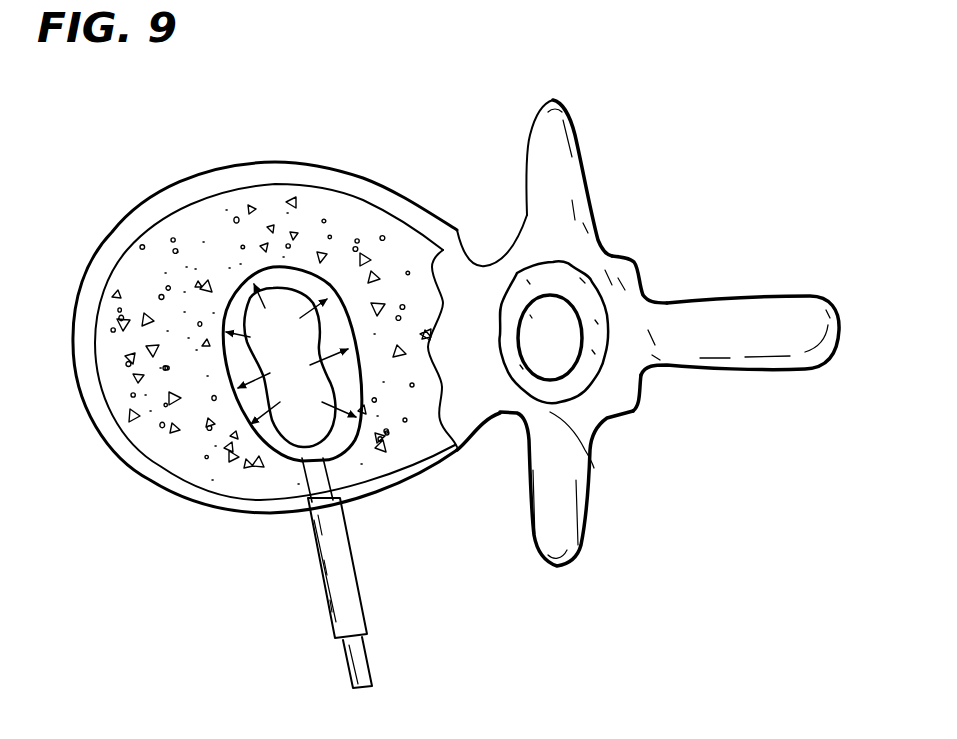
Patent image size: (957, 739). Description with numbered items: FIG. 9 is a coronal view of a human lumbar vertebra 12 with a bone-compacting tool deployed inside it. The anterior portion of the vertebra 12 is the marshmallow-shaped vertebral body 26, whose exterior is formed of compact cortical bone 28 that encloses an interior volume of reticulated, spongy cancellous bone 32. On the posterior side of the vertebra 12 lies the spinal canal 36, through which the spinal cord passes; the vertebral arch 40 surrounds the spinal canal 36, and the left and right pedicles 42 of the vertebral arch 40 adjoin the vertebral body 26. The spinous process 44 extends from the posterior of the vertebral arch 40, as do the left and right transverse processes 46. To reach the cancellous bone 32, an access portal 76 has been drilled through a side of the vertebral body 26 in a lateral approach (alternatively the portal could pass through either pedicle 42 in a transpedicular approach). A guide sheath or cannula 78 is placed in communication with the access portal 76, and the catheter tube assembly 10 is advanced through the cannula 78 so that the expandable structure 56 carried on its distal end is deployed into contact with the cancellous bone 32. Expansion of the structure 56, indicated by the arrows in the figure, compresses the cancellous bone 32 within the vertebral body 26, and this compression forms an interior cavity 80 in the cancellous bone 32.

The catheter tube assembly 10 is at (374, 661).
The vertebra 12 is at (610, 82).
The vertebral body 26 is at (176, 172).
The cortical bone 28 is at (235, 502).
The cancellous bone 32 is at (152, 408).
The spinal canal 36 is at (547, 315).
The vertebral arch 40 is at (602, 332).
The pedicles 42 is at (580, 277).
The spinous process 44 is at (786, 327).
The transverse processes 46 is at (552, 140).
The expandable structure 56 is at (275, 332).
The access portal 76 is at (345, 500).
The cannula 78 is at (347, 577).
The interior cavity 80 is at (300, 272).